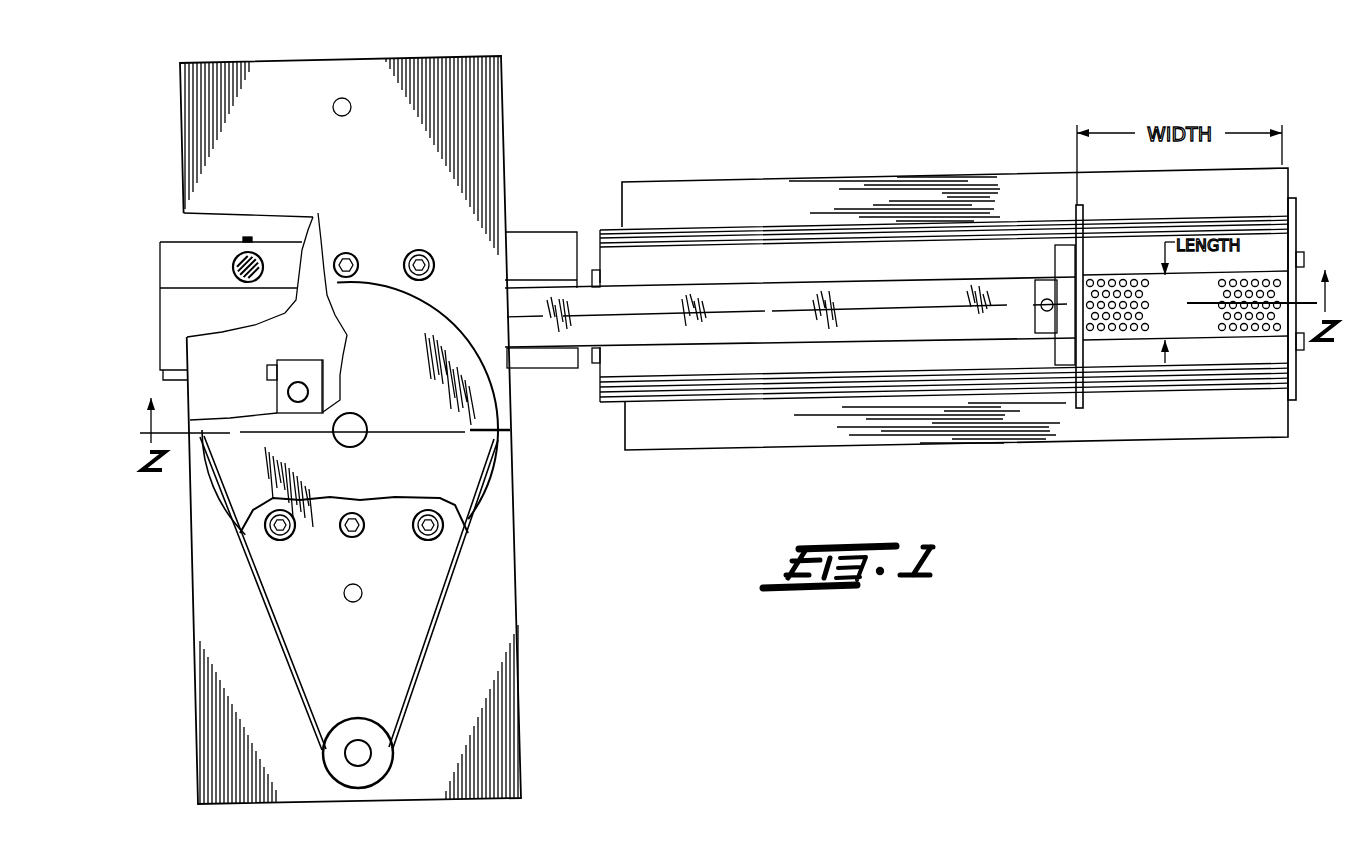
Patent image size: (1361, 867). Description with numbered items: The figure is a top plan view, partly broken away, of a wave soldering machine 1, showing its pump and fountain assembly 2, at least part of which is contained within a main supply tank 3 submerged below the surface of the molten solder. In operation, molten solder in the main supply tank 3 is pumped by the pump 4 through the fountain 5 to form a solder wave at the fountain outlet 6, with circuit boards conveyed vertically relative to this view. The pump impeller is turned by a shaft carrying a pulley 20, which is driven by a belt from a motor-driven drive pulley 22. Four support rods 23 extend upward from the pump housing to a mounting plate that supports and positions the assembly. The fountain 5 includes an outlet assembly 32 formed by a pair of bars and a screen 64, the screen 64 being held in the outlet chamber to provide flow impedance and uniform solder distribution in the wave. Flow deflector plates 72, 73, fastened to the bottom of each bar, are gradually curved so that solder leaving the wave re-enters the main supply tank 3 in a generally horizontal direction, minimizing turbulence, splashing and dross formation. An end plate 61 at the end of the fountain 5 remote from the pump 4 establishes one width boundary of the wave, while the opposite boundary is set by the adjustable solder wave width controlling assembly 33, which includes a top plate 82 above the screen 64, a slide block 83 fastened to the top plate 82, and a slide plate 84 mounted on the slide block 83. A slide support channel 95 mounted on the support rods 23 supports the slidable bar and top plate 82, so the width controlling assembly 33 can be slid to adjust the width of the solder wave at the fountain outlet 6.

The wave soldering machine 1 is at (583, 148).
The pump and fountain assembly 2 is at (556, 228).
The main supply tank 3 is at (676, 166).
The pump 4 is at (503, 147).
The fountain 5 is at (737, 182).
The fountain outlet 6 is at (1102, 260).
The pulley 20 is at (430, 317).
The drive pulley 22 is at (358, 718).
The support rods 23 is at (234, 263).
The outlet assembly 32 is at (1137, 252).
The adjustable solder wave width controlling assembly 33 is at (1060, 212).
The end plate 61 is at (1292, 243).
The screen 64 is at (1217, 285).
The flow deflector plate 72 is at (705, 438).
The flow deflector plate 73 is at (760, 193).
The top plate 82 is at (924, 298).
The slide block 83 is at (1053, 270).
The slide plate 84 is at (1075, 238).
The slide support channel 95 is at (542, 360).